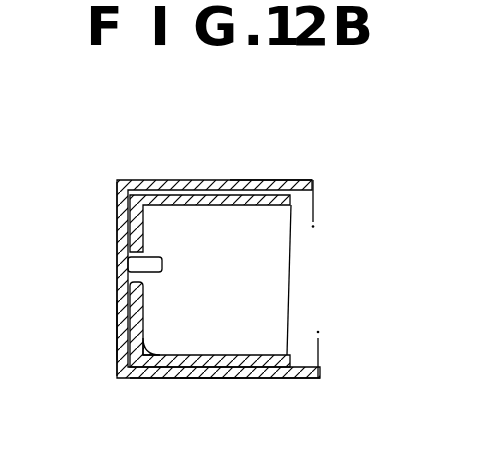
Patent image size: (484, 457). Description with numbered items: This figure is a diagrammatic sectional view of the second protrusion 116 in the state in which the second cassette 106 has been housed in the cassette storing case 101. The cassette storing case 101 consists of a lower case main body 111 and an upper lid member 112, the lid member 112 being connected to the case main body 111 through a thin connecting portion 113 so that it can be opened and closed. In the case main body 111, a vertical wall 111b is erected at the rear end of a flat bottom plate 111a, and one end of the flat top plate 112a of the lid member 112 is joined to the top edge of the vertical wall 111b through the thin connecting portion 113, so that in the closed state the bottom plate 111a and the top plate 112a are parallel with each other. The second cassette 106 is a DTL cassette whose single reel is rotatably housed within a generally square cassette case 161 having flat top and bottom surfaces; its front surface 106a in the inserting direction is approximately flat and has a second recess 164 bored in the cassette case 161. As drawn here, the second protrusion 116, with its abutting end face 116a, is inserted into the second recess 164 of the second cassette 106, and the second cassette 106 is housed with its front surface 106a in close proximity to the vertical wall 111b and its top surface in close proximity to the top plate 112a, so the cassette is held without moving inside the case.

The cassette storing case 101 is at (275, 121).
The second cassette 106 is at (296, 255).
The front surface 106a is at (155, 378).
The case main body 111 is at (276, 382).
The bottom plate 111a is at (205, 380).
The vertical wall 111b is at (117, 327).
The lid member 112 is at (207, 178).
The top plate 112a is at (263, 180).
The thin connecting portion 113 is at (117, 183).
The second protrusion 116 is at (136, 262).
The abutting end face 116a is at (162, 265).
The cassette case 161 is at (284, 322).
The second recess 164 is at (133, 283).